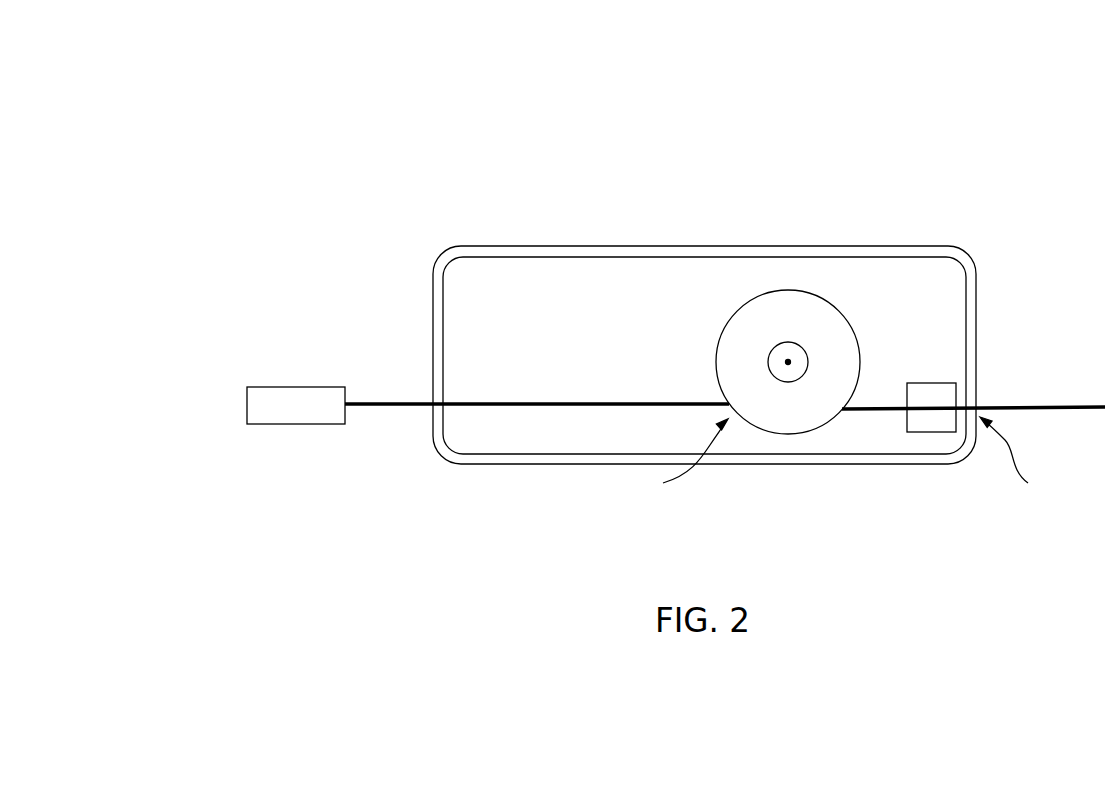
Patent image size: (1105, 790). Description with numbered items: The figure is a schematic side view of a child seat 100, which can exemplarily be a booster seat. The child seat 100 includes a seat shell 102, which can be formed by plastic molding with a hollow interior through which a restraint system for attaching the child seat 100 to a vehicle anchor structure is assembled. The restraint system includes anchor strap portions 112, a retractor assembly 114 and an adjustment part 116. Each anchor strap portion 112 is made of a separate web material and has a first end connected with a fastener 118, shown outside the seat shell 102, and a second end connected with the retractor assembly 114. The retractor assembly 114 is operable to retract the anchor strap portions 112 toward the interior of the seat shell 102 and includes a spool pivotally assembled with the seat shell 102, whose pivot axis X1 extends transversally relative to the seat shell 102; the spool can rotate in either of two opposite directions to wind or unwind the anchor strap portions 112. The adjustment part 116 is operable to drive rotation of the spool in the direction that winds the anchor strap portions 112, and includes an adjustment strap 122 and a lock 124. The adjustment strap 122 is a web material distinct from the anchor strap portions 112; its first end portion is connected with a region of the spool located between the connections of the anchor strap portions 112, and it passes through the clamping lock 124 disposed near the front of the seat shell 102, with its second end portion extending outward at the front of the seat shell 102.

The child seat 100 is at (135, 63).
The seat shell 102 is at (720, 247).
The pivot axis X1 is at (788, 362).
The anchor strap portions 112 is at (378, 400).
The retractor assembly 114 is at (675, 460).
The adjustment part 116 is at (1024, 460).
The fastener 118 is at (293, 400).
The adjustment strap 122 is at (1027, 405).
The lock 124 is at (930, 433).